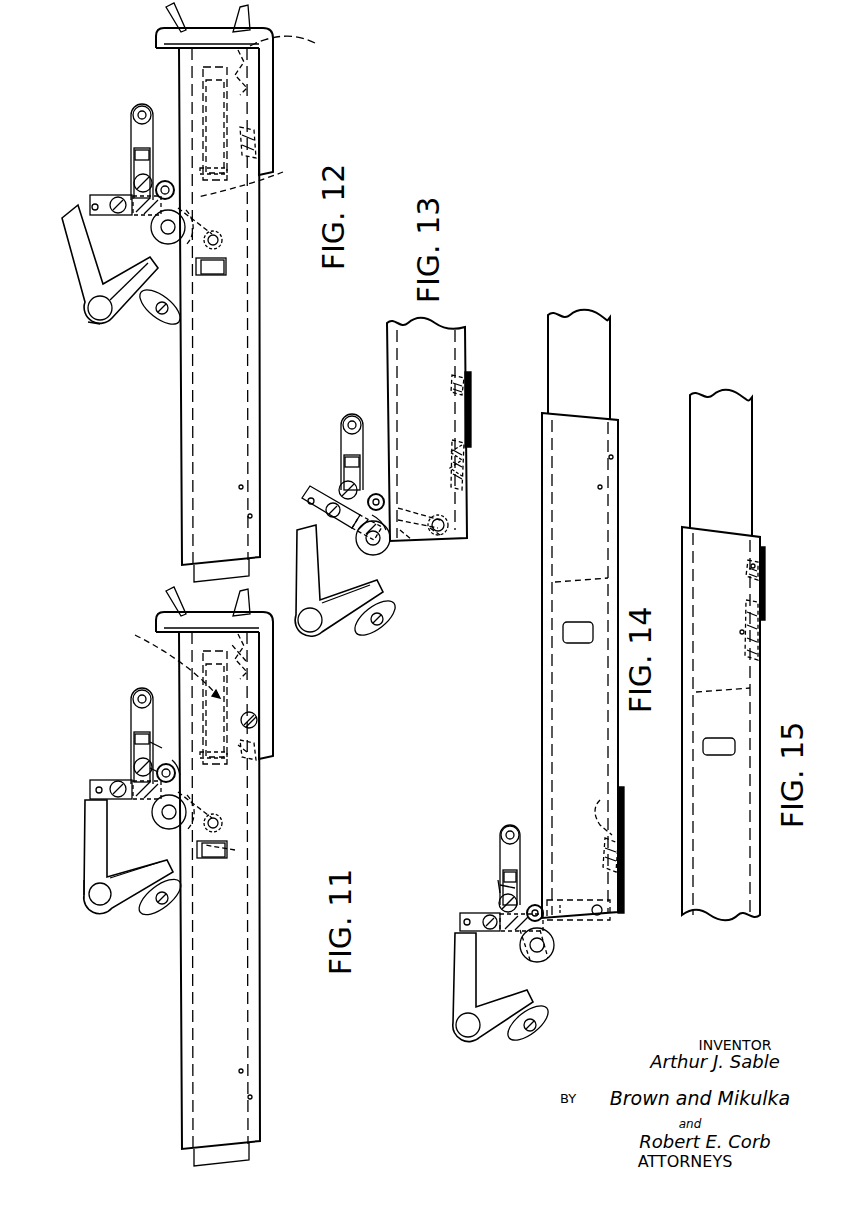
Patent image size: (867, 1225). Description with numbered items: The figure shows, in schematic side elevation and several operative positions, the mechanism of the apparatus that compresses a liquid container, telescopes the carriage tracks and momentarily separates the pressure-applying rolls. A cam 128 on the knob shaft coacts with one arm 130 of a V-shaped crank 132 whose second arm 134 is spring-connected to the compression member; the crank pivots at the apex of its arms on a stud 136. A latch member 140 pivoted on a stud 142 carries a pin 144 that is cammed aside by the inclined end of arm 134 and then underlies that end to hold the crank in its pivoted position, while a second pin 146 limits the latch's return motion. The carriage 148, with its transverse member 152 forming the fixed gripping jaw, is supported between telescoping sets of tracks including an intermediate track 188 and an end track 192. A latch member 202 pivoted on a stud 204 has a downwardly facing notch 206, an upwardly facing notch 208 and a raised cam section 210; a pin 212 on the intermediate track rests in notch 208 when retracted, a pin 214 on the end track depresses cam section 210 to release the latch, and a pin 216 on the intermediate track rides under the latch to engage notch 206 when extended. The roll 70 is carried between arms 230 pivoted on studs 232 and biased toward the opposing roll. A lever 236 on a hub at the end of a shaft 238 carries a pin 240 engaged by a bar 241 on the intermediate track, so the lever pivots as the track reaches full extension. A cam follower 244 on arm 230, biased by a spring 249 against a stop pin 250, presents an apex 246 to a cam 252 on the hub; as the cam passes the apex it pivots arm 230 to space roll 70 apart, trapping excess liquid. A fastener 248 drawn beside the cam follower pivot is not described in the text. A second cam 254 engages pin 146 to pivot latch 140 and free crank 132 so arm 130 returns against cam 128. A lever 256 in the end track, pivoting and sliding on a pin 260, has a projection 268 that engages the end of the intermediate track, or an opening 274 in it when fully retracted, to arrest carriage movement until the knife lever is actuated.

In FIG. 14, the roll 70 is at (514, 962).
In FIG. 12, the cam 128 is at (146, 314).
In FIG. 11, the cam 128 is at (157, 910).
In FIG. 13, the cam 128 is at (368, 645).
In FIG. 14, the cam 128 is at (528, 1036).
In FIG. 12, the arm 130 is at (118, 302).
In FIG. 11, the arm 130 is at (125, 900).
In FIG. 13, the arm 130 is at (340, 612).
In FIG. 12, the V-shaped crank 132 is at (85, 312).
In FIG. 11, the V-shaped crank 132 is at (100, 894).
In FIG. 13, the V-shaped crank 132 is at (298, 598).
In FIG. 14, the V-shaped crank 132 is at (452, 999).
In FIG. 12, the arm 134 is at (78, 262).
In FIG. 11, the arm 134 is at (128, 857).
In FIG. 13, the arm 134 is at (339, 580).
In FIG. 14, the arm 134 is at (453, 976).
In FIG. 12, the stud 136 is at (97, 322).
In FIG. 11, the stud 136 is at (83, 897).
In FIG. 12, the latch member 140 is at (97, 193).
In FIG. 11, the latch member 140 is at (97, 786).
In FIG. 13, the latch member 140 is at (309, 495).
In FIG. 14, the latch member 140 is at (501, 922).
In FIG. 12, the stud 142 is at (114, 198).
In FIG. 11, the stud 142 is at (113, 783).
In FIG. 12, the pin 144 is at (91, 204).
In FIG. 11, the pin 144 is at (94, 796).
In FIG. 13, the pin 144 is at (307, 503).
In FIG. 12, the pin 146 is at (158, 208).
In FIG. 11, the pin 146 is at (150, 797).
In FIG. 13, the pin 146 is at (357, 548).
In FIG. 14, the pin 146 is at (503, 938).
In FIG. 12, the carriage 148 is at (155, 34).
In FIG. 11, the carriage 148 is at (156, 613).
In FIG. 12, the transverse member 152 is at (164, 48).
In FIG. 12, the intermediate track 188 is at (259, 333).
In FIG. 11, the intermediate track 188 is at (259, 1050).
In FIG. 13, the intermediate track 188 is at (390, 434).
In FIG. 14, the intermediate track 188 is at (541, 793).
In FIG. 15, the intermediate track 188 is at (682, 775).
In FIG. 12, the end track 192 is at (192, 503).
In FIG. 11, the end track 192 is at (192, 1110).
In FIG. 14, the end track 192 is at (544, 362).
In FIG. 15, the end track 192 is at (752, 492).
In FIG. 12, the latch member 202 is at (268, 78).
In FIG. 11, the latch member 202 is at (254, 695).
In FIG. 13, the latch member 202 is at (472, 402).
In FIG. 14, the latch member 202 is at (624, 829).
In FIG. 15, the latch member 202 is at (744, 644).
In FIG. 12, the stud 204 is at (256, 120).
In FIG. 11, the stud 204 is at (248, 736).
In FIG. 13, the stud 204 is at (470, 440).
In FIG. 13, the engagement notch 206 is at (452, 470).
In FIG. 14, the engagement notch 206 is at (606, 855).
In FIG. 15, the engagement notch 206 is at (762, 649).
In FIG. 13, the engagement notch 208 is at (453, 383).
In FIG. 15, the engagement notch 208 is at (765, 572).
In FIG. 12, the cam section 210 is at (202, 70).
In FIG. 11, the cam section 210 is at (213, 707).
In FIG. 13, the cam section 210 is at (454, 444).
In FIG. 15, the cam section 210 is at (752, 600).
In FIG. 12, the pin 212 is at (294, 43).
In FIG. 11, the pin 212 is at (246, 661).
In FIG. 15, the pin 212 is at (752, 565).
In FIG. 12, the pin 214 is at (239, 486).
In FIG. 11, the pin 214 is at (239, 1070).
In FIG. 14, the pin 214 is at (598, 485).
In FIG. 15, the pin 214 is at (740, 630).
In FIG. 12, the pin 216 is at (252, 519).
In FIG. 11, the pin 216 is at (252, 1099).
In FIG. 13, the pin 216 is at (468, 490).
In FIG. 14, the pin 216 is at (613, 455).
In FIG. 12, the arm 230 is at (142, 152).
In FIG. 11, the arm 230 is at (130, 730).
In FIG. 13, the arm 230 is at (341, 450).
In FIG. 14, the arm 230 is at (500, 856).
In FIG. 12, the stud 232 is at (138, 105).
In FIG. 11, the stud 232 is at (142, 699).
In FIG. 13, the stud 232 is at (350, 415).
In FIG. 14, the stud 232 is at (508, 825).
In FIG. 11, the lever 236 is at (235, 850).
In FIG. 13, the lever 236 is at (440, 534).
In FIG. 14, the lever 236 is at (575, 922).
In FIG. 12, the shaft 238 is at (164, 181).
In FIG. 11, the shaft 238 is at (166, 773).
In FIG. 14, the shaft 238 is at (535, 904).
In FIG. 12, the pin 240 is at (222, 236).
In FIG. 11, the pin 240 is at (213, 823).
In FIG. 13, the pin 240 is at (434, 518).
In FIG. 14, the pin 240 is at (625, 918).
In FIG. 13, the bar 241 is at (410, 542).
In FIG. 14, the bar 241 is at (600, 925).
In FIG. 11, the cam follower 244 is at (150, 742).
In FIG. 13, the cam follower 244 is at (337, 472).
In FIG. 14, the cam follower 244 is at (500, 883).
In FIG. 11, the apex 246 is at (172, 760).
In FIG. 13, the apex 246 is at (372, 515).
In FIG. 14, the apex 246 is at (497, 884).
In FIG. 12, the screw 248 is at (140, 178).
In FIG. 11, the screw 248 is at (134, 768).
In FIG. 14, the screw 248 is at (499, 901).
In FIG. 12, the spring 249 is at (145, 157).
In FIG. 11, the stop pin 250 is at (146, 740).
In FIG. 14, the stop pin 250 is at (503, 873).
In FIG. 11, the cam 252 is at (158, 772).
In FIG. 13, the cam 252 is at (377, 494).
In FIG. 13, the cam 254 is at (340, 485).
In FIG. 14, the cam 254 is at (540, 955).
In FIG. 12, the lever 256 is at (252, 173).
In FIG. 11, the lever 256 is at (168, 654).
In FIG. 11, the pin 260 is at (247, 752).
In FIG. 12, the projection 268 is at (228, 267).
In FIG. 11, the projection 268 is at (229, 852).
In FIG. 12, the opening 274 is at (212, 278).
In FIG. 11, the opening 274 is at (222, 862).